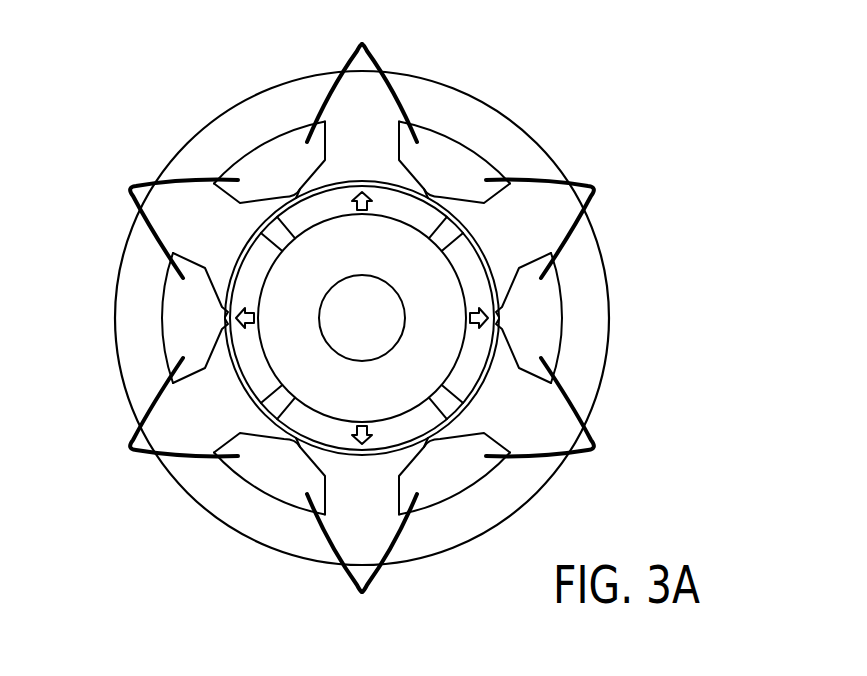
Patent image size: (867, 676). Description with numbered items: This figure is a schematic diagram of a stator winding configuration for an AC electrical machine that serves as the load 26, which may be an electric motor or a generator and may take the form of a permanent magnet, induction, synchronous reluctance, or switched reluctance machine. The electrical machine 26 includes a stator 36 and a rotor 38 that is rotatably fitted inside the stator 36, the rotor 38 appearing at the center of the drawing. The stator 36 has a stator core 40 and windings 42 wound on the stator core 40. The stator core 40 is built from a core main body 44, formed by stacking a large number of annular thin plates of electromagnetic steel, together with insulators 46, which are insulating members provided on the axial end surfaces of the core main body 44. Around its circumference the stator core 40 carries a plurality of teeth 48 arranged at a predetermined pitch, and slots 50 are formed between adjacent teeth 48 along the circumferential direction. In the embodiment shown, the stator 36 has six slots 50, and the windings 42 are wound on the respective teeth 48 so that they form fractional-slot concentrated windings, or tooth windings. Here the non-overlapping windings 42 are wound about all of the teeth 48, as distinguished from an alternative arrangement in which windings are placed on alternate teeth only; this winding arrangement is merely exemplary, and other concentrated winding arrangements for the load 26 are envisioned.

The load 26 is at (546, 70).
The stator 36 is at (610, 372).
The rotor 38 is at (378, 333).
The stator core 40 is at (89, 354).
The windings 42 is at (128, 202).
The core main body 44 is at (185, 143).
The insulators 46 is at (362, 318).
The teeth 48 is at (513, 293).
The slots 50 is at (282, 463).